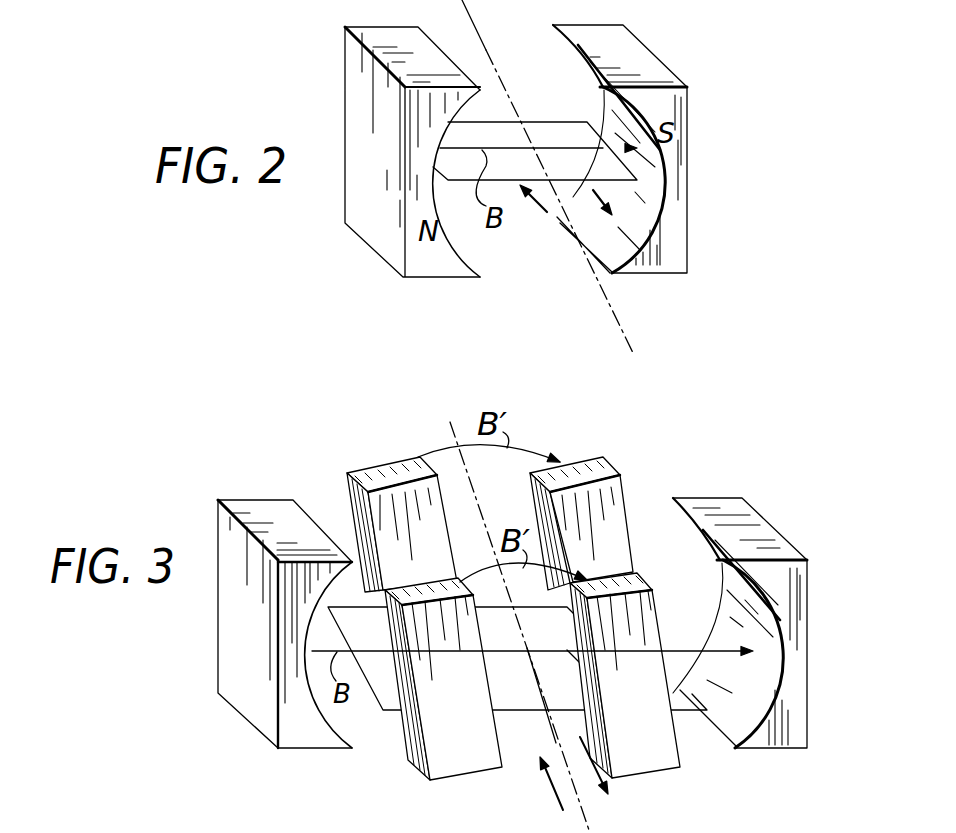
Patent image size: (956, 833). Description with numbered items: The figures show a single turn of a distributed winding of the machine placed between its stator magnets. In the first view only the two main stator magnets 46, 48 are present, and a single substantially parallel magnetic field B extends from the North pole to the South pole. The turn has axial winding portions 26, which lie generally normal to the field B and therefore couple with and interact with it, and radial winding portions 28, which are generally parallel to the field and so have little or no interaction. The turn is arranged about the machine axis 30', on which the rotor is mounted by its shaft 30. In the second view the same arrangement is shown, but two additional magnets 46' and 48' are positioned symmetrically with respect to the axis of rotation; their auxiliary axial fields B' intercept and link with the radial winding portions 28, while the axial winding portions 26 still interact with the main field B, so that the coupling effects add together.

In FIG. 2, the axial winding portions 26 is at (589, 130).
In FIG. 3, the axial winding portions 26 is at (670, 627).
In FIG. 2, the radial winding portions 28 is at (554, 122).
In FIG. 2, the machine axis 30' is at (548, 177).
In FIG. 3, the shaft 30 is at (540, 627).
In FIG. 3, the main stator magnet 46 is at (253, 624).
In FIG. 3, the additional magnet 46' is at (420, 614).
In FIG. 3, the main stator magnet 48 is at (775, 623).
In FIG. 3, the additional magnet 48' is at (637, 608).